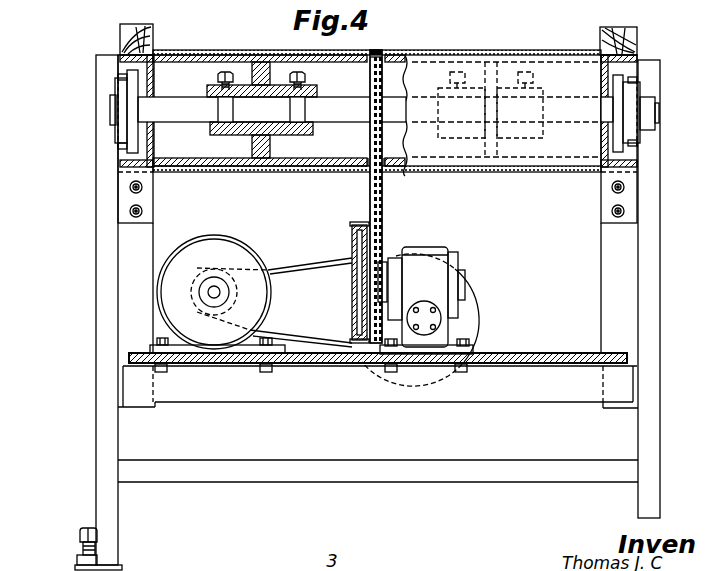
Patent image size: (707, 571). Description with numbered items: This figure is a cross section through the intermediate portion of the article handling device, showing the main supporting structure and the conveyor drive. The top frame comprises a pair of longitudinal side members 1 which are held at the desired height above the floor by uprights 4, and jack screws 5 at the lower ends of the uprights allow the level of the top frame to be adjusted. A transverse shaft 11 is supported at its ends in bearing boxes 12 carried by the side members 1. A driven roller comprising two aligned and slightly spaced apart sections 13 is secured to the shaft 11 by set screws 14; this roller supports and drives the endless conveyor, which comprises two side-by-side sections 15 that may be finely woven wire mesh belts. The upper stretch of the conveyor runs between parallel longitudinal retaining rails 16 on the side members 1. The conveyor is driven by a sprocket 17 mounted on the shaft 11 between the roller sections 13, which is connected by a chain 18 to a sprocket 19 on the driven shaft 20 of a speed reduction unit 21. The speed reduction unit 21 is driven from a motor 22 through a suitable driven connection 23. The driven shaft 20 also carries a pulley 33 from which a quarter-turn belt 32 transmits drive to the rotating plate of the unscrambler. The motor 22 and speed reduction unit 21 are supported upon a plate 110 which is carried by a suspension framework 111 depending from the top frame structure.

The longitudinal side member 1 is at (158, 146).
The upright 4 is at (97, 438).
The jack screw 5 is at (81, 551).
The second transverse shaft 11 is at (333, 118).
The bearing box 12 is at (118, 133).
The driven roller section 13 is at (228, 162).
The set screw 14 is at (293, 74).
The endless conveyor section 15 is at (208, 53).
The retaining rail 16 is at (128, 38).
The sprocket 17 is at (372, 145).
The chain 18 is at (383, 207).
The sprocket 19 is at (383, 251).
The driven shaft 20 is at (352, 284).
The speed reduction unit 21 is at (444, 247).
The motor 22 is at (228, 245).
The driven connection 23 is at (310, 258).
The quarter-turn belt 32 is at (355, 224).
The pulley 33 is at (354, 314).
The plate 110 is at (508, 358).
The suspension framework 111 is at (461, 395).